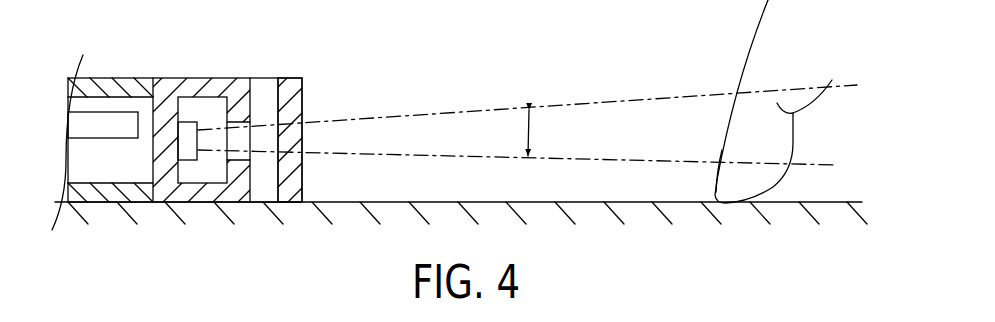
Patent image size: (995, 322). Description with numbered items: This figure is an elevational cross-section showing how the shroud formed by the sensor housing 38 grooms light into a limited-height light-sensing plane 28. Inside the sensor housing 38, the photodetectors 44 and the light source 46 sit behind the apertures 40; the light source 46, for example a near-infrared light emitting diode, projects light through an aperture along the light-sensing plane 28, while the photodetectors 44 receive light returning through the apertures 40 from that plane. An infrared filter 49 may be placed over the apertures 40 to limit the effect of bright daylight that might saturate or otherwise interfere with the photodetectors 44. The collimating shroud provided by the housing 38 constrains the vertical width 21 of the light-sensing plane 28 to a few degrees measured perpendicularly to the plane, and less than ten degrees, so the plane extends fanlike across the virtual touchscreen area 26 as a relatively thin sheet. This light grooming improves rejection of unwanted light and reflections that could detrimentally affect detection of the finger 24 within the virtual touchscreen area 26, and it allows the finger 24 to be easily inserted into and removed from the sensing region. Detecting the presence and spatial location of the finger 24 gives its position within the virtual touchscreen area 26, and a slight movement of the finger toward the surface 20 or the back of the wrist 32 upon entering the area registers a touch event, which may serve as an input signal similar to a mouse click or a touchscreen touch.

The sensor housing 38 is at (187, 77).
The apertures 40 is at (240, 125).
The photodetectors 44 is at (197, 191).
The light source 46 is at (193, 155).
The infrared filter 49 is at (289, 193).
The virtual touchscreen area 26 is at (626, 94).
The vertical width 21 is at (534, 132).
The light-sensing plane 28 is at (657, 143).
The finger 24 is at (783, 133).
The surface 20 is at (461, 226).
The back of the wrist 32 is at (462, 203).